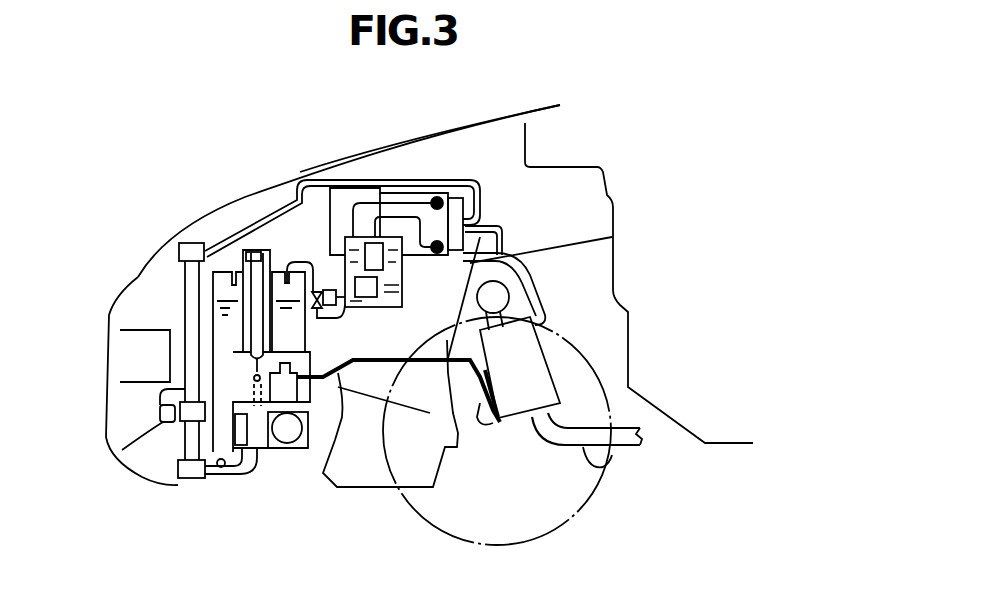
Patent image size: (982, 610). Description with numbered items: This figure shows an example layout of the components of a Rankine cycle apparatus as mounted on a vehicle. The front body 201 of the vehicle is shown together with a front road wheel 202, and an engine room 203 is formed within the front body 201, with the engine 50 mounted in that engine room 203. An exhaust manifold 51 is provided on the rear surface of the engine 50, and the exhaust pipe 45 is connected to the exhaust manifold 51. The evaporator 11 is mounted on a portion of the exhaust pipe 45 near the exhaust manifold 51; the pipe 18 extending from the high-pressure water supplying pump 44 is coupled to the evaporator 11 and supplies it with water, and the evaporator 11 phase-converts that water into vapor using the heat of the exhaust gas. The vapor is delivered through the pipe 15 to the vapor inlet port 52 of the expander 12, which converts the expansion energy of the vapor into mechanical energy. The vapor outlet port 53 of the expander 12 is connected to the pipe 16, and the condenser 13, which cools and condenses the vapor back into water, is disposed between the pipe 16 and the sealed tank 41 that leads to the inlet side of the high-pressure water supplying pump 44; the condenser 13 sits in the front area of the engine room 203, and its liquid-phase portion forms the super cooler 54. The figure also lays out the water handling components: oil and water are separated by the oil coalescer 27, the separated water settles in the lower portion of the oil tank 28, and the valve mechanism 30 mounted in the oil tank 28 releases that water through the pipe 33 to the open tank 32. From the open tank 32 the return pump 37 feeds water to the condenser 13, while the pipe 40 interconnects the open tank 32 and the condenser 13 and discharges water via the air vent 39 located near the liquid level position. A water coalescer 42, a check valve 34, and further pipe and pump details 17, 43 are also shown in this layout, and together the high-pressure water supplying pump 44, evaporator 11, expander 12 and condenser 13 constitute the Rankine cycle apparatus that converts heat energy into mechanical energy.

The evaporator 11 is at (540, 375).
The expander 12 is at (390, 197).
The condenser 13 is at (172, 303).
The pipe 15 is at (540, 287).
The pipe 16 is at (423, 178).
The drain hose 17 is at (243, 497).
The pipe 18 is at (496, 412).
The oil coalescer 27 is at (375, 257).
The oil tank 28 is at (604, 237).
The valve mechanism 30 is at (330, 303).
The open tank 32 is at (223, 325).
The pipe 33 is at (298, 260).
The check valve 34 is at (222, 470).
The return pump 37 is at (258, 440).
The air vent 39 is at (186, 442).
The pipe 40 is at (200, 358).
The sealed tank 41 is at (244, 394).
The water coalescer 42 is at (253, 254).
The pump 43 is at (288, 434).
The high-pressure water supplying pump 44 is at (293, 394).
The exhaust pipe 45 is at (612, 466).
The engine 50 is at (372, 490).
The exhaust manifold 51 is at (478, 303).
The vapor inlet port 52 is at (505, 224).
The vapor outlet port 53 is at (470, 207).
The super cooler 54 is at (186, 442).
The front body 201 is at (410, 140).
The front road wheel 202 is at (480, 546).
The engine room 203 is at (390, 162).